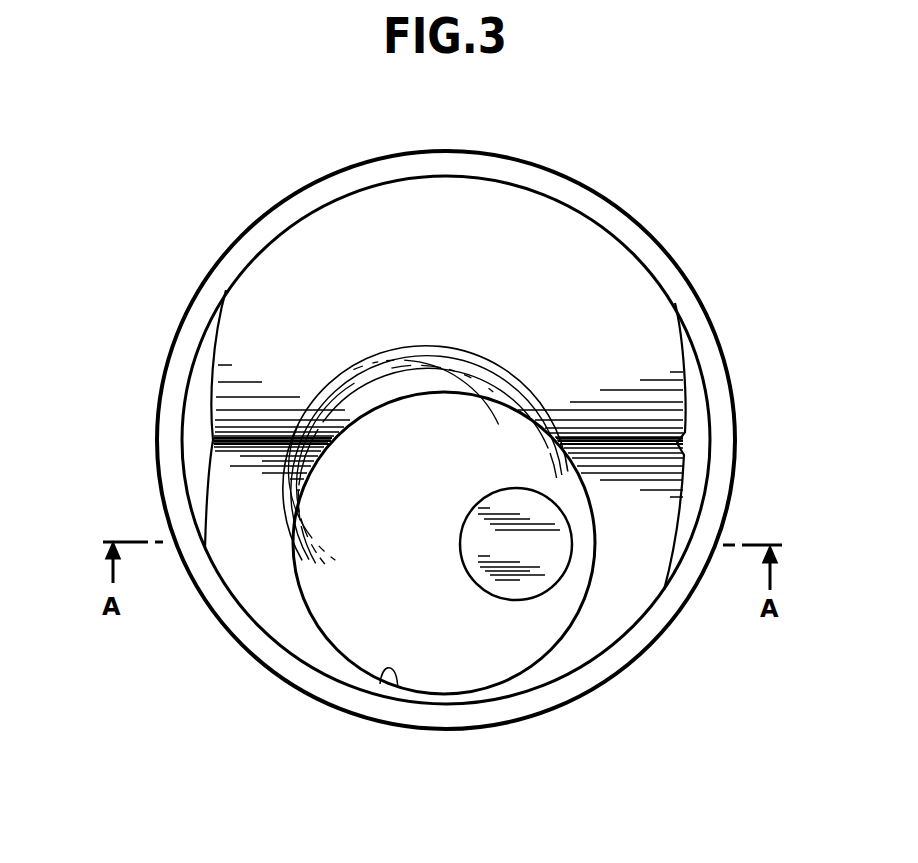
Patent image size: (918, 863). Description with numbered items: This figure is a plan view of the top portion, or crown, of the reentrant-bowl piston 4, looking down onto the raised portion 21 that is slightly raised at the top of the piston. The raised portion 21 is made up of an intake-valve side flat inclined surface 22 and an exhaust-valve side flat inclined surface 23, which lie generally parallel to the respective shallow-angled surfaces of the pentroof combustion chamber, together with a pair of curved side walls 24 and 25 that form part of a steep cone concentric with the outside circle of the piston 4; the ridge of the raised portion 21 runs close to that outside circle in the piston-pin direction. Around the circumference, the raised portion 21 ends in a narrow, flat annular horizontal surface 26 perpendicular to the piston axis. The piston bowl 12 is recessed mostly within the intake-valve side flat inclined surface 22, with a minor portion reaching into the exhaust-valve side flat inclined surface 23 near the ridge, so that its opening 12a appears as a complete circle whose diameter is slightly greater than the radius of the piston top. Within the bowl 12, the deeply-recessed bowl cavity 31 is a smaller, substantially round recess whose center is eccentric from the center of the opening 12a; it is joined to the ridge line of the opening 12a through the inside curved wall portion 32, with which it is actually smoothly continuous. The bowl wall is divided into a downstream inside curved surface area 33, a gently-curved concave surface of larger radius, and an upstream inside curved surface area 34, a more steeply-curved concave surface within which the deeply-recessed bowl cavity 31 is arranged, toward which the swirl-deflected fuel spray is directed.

The piston 4 is at (722, 310).
The piston bowl 12 is at (345, 632).
The opening of the piston bowl 12a is at (398, 688).
The raised portion 21 is at (278, 283).
The intake-valve side flat inclined surface 22 is at (643, 578).
The exhaust-valve side flat inclined surface 23 is at (633, 302).
The curved side wall 24 is at (697, 422).
The curved side wall 25 is at (190, 425).
The annular horizontal surface 26 is at (573, 190).
The deeply-recessed bowl cavity 31 is at (550, 567).
The inside curved wall portion 32 is at (468, 653).
The downstream inside curved surface area 33 is at (325, 580).
The upstream inside curved surface area 34 is at (582, 562).